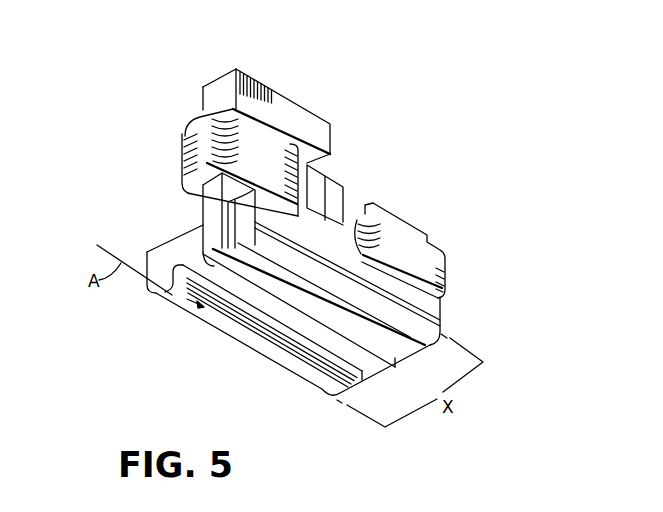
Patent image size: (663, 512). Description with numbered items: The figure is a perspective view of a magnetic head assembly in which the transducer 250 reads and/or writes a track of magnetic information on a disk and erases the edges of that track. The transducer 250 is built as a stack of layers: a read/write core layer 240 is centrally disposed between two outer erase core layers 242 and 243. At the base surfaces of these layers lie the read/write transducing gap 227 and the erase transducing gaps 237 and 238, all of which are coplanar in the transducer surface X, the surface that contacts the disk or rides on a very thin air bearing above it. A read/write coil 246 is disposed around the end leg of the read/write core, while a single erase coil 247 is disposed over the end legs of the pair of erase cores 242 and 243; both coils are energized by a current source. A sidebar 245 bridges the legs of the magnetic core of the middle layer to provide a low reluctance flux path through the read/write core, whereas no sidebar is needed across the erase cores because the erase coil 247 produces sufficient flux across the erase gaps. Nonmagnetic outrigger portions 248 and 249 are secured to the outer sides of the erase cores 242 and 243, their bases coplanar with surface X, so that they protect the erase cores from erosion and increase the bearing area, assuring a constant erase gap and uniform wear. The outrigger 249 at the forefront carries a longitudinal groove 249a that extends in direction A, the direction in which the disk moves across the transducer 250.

The read/write transducing gap 227 is at (291, 287).
The erase transducing gap 237 is at (330, 303).
The erase transducing gap 238 is at (283, 285).
The read/write core layer 240 is at (212, 214).
The erase core layer 242 is at (417, 351).
The erase core layer 243 is at (172, 249).
The sidebar 245 is at (306, 110).
The read/write coil 246 is at (196, 142).
The erase coil 247 is at (442, 262).
The outrigger portion 248 is at (403, 303).
The outrigger portion 249 is at (184, 302).
The longitudinal groove 249a is at (336, 349).
The transducer 250 is at (358, 188).